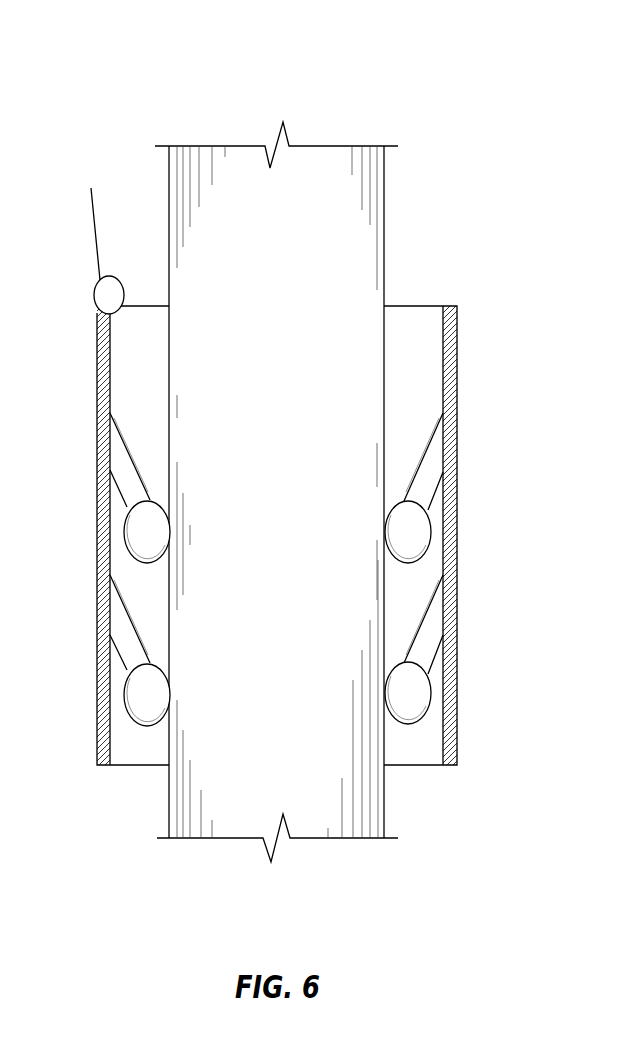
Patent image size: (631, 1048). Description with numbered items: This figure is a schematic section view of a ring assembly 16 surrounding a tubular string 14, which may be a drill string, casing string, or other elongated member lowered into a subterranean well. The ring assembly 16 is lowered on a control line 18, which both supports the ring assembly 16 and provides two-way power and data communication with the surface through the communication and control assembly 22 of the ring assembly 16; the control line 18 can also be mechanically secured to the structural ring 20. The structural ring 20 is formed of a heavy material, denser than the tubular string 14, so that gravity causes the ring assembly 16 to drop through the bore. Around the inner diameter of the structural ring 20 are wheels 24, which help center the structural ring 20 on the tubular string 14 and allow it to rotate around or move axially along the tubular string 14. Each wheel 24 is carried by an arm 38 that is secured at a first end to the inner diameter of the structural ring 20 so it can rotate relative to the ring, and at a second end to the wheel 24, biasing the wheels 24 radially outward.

The tubular string 14 is at (384, 208).
The ring assembly 16 is at (495, 67).
The control line 18 is at (93, 217).
The structural ring 20 is at (408, 747).
The communication and control assembly 22 is at (108, 296).
The wheel 24 is at (153, 693).
The arm 38 is at (427, 487).